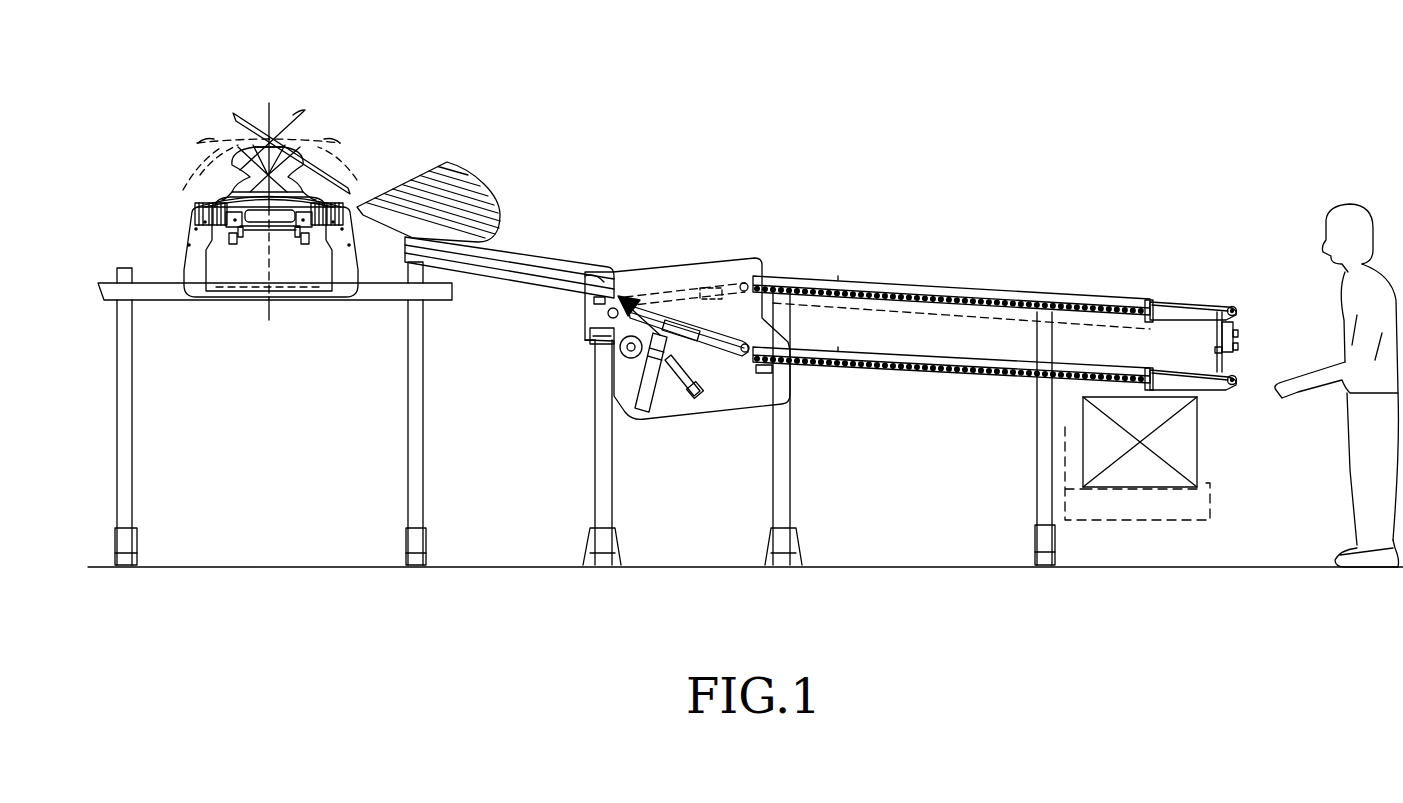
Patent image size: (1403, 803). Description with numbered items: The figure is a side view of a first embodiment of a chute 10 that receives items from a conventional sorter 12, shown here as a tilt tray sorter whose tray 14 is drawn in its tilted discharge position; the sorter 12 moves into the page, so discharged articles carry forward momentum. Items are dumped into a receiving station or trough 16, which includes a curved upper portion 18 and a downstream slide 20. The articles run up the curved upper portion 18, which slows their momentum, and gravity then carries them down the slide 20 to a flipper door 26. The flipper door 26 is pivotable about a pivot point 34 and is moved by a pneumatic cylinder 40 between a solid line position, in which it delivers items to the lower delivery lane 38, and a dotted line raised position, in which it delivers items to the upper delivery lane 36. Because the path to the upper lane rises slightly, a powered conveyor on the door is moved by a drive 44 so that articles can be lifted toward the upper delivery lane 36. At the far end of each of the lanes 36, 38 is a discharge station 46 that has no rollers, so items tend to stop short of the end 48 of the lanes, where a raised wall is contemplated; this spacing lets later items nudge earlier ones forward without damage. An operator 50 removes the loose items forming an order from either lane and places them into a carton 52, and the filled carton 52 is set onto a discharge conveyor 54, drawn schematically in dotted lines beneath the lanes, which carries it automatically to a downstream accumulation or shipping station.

The chute 10 is at (923, 148).
The sorter 12 is at (323, 118).
The tray 14 is at (330, 172).
The trough 16 is at (483, 292).
The curved upper portion 18 is at (472, 182).
The slide 20 is at (535, 245).
The flipper door 26 is at (708, 280).
The pivot point 34 is at (607, 313).
The upper delivery lane 36 is at (838, 282).
The lower delivery lane 38 is at (923, 372).
The pneumatic cylinder 40 is at (653, 402).
The drive 44 is at (643, 368).
The discharge station 46 is at (1190, 370).
The end of the lanes 48 is at (1241, 297).
The operator 50 is at (1348, 215).
The carton 52 is at (1160, 473).
The discharge conveyor 54 is at (1108, 490).